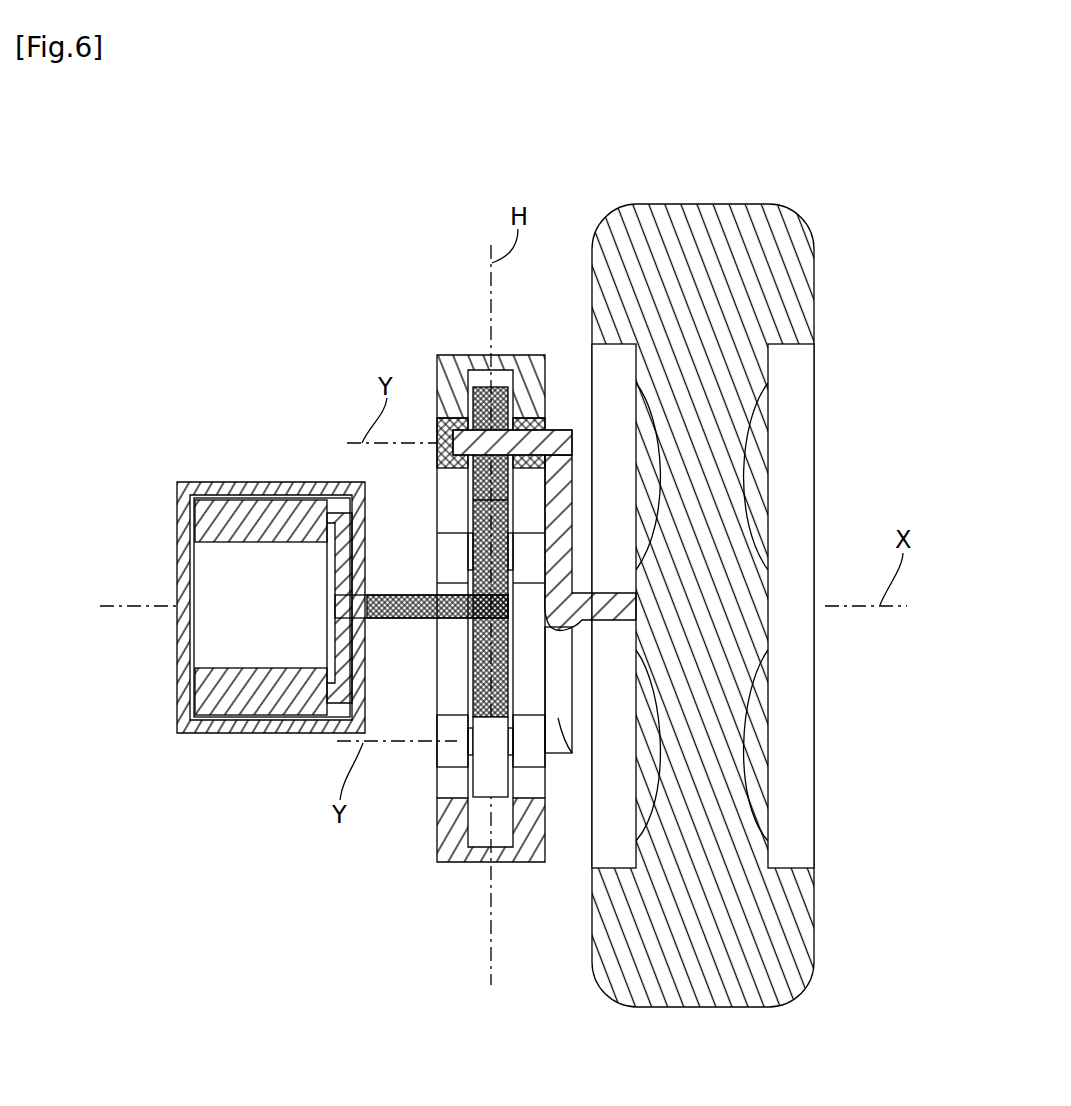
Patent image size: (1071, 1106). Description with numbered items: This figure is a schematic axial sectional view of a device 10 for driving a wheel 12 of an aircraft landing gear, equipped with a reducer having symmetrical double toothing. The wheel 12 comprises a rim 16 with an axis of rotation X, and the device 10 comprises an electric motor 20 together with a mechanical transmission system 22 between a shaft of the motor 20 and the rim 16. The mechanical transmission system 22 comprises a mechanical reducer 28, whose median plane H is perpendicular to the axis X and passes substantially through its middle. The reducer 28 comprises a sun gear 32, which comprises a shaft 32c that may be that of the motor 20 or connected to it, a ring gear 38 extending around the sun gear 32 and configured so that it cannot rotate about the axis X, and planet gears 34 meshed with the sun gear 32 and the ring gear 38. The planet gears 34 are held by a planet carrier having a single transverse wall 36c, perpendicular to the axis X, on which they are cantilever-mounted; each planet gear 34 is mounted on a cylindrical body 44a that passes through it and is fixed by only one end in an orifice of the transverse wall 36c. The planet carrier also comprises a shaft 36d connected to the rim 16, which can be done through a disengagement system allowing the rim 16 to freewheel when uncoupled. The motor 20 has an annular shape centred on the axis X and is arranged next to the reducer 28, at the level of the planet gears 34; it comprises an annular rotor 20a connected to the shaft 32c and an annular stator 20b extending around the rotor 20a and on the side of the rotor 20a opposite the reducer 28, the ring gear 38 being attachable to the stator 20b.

The device 10 is at (898, 135).
The wheel 12 is at (824, 243).
The rim 16 is at (820, 355).
The electric motor 20 is at (271, 631).
The rotor 20a is at (238, 505).
The stator 20b is at (267, 480).
The mechanical transmission system 22 is at (428, 328).
The mechanical reducer 28 is at (501, 621).
The sun gear 32 is at (457, 682).
The shaft 32c is at (378, 590).
The planet gears 34 is at (435, 758).
The transverse wall 36c is at (572, 753).
The shaft 36d is at (582, 593).
The ring gear 38 is at (463, 877).
The cylindrical body 44a is at (525, 430).